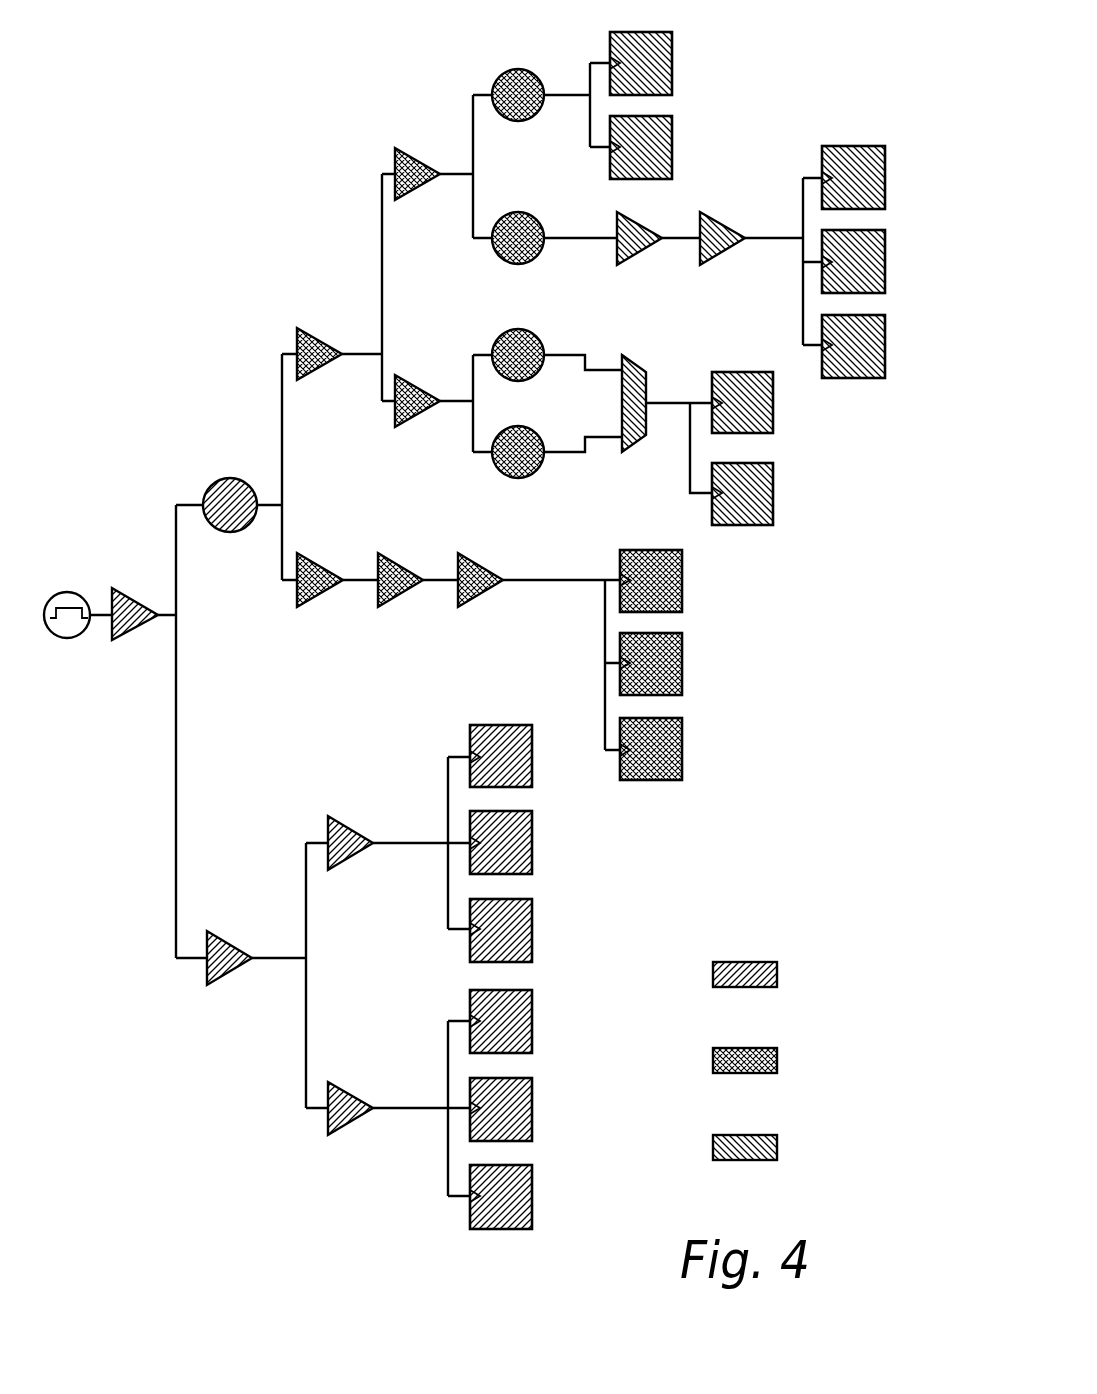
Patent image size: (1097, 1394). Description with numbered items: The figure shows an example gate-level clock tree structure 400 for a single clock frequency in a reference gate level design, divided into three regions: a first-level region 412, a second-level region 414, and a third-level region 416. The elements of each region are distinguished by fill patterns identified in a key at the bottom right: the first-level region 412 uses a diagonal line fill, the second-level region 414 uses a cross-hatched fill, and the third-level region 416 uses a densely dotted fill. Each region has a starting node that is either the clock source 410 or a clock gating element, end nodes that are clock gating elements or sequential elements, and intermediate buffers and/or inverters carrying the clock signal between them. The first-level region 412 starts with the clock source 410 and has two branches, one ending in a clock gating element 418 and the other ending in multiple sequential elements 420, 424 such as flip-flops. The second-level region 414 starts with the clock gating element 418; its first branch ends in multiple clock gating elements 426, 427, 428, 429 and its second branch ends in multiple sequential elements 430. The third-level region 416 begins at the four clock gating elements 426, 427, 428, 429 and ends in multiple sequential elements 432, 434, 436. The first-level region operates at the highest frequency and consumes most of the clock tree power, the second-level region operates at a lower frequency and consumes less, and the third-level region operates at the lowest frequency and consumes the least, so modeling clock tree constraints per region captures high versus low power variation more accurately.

The gate-level clock tree structure 400 is at (150, 93).
The clock source 410 is at (78, 592).
The level 1 region 412 is at (727, 962).
The level 2 region 414 is at (727, 1048).
The level 3 region 416 is at (727, 1135).
The clock gating element 418 is at (233, 478).
The sequential elements 420 is at (532, 757).
The sequential element 424 is at (532, 1021).
The clock gating element 426 is at (521, 68).
The clock gating element 427 is at (516, 212).
The clock gating element 428 is at (516, 329).
The clock gating element 429 is at (516, 426).
The sequential elements 430 is at (682, 580).
The sequential elements 432 is at (672, 63).
The sequential elements 434 is at (885, 178).
The sequential elements 436 is at (773, 400).